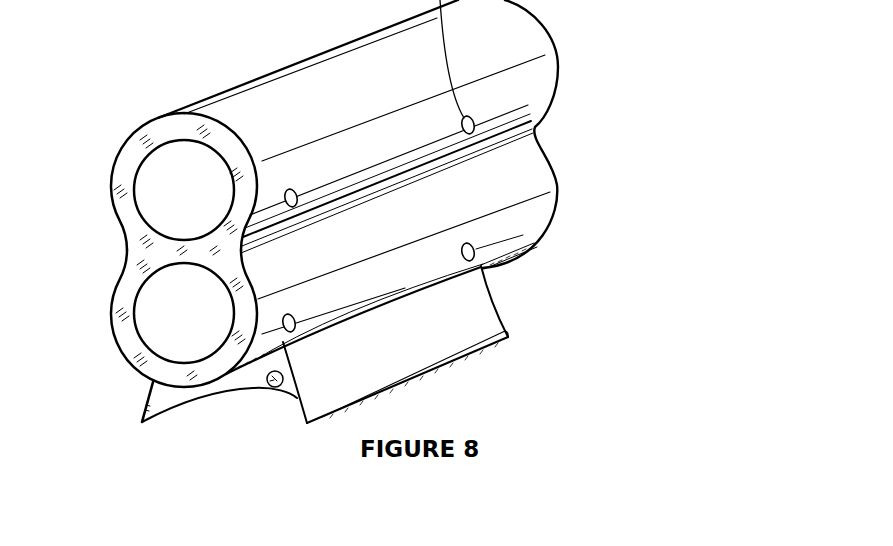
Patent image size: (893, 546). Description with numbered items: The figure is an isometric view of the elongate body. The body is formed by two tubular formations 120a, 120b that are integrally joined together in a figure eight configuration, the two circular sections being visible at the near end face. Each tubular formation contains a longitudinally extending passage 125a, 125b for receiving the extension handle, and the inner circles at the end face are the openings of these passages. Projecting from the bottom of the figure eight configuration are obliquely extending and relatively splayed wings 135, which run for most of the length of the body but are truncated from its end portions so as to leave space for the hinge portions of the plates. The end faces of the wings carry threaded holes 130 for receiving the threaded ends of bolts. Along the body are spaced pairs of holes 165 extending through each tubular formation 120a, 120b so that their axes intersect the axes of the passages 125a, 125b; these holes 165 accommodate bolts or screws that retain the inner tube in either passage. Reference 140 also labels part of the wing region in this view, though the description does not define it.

The tubular formation 120a is at (114, 163).
The longitudinally extending passage 125a is at (138, 208).
The tubular formation 120b is at (112, 297).
The longitudinally extending passage 125b is at (143, 341).
The threaded hole 130 is at (259, 392).
The wing 135 is at (147, 406).
The flange edge 140 is at (204, 391).
The hole 165 is at (291, 189).